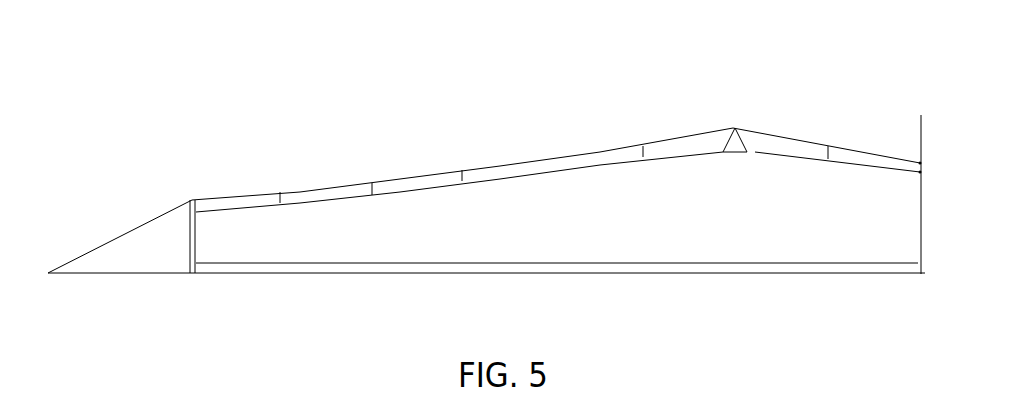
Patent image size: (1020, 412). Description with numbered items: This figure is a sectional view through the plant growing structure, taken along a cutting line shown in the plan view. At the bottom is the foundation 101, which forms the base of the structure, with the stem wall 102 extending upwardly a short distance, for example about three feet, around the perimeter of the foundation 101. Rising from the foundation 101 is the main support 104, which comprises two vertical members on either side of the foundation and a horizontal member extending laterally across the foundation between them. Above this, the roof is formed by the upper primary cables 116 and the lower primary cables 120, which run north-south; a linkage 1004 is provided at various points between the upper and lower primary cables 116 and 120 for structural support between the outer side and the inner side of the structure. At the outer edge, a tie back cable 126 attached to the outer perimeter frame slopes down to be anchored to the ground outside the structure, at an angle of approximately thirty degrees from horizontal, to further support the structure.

The foundation 101 is at (743, 277).
The stem wall 102 is at (876, 268).
The main support 104 is at (739, 138).
The upper primary cables 116 is at (305, 186).
The lower primary cables 120 is at (345, 197).
The tie back cables 126 is at (96, 247).
The linkage 1004 is at (462, 175).